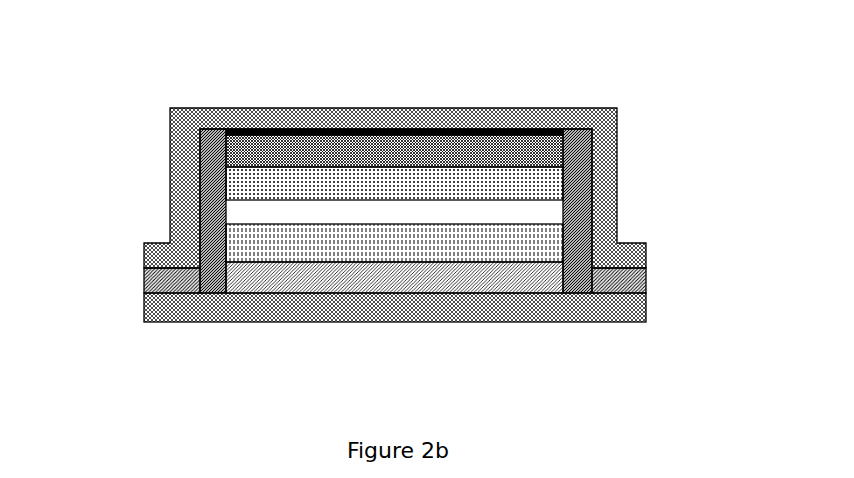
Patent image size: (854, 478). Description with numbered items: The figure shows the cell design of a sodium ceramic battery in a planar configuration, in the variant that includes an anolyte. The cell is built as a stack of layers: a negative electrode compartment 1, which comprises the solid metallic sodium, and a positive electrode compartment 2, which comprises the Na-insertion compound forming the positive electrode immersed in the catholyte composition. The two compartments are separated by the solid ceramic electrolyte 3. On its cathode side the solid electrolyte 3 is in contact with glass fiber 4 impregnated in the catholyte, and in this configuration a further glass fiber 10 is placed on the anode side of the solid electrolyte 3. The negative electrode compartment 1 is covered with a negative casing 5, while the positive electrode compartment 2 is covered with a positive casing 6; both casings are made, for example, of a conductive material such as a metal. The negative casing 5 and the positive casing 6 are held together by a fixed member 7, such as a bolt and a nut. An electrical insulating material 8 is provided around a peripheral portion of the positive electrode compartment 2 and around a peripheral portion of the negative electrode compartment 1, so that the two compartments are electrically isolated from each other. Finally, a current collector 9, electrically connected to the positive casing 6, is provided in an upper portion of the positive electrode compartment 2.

The negative electrode compartment 1 is at (261, 268).
The positive electrode compartment 2 is at (264, 143).
The solid ceramic electrolyte 3 is at (216, 212).
The glass fiber 4 is at (239, 178).
The negative casing 5 is at (286, 303).
The positive casing 6 is at (616, 151).
The fixed member 7 is at (628, 281).
The electrical insulating material 8 is at (586, 174).
The current collector 9 is at (509, 126).
The glass fiber 10 is at (492, 250).